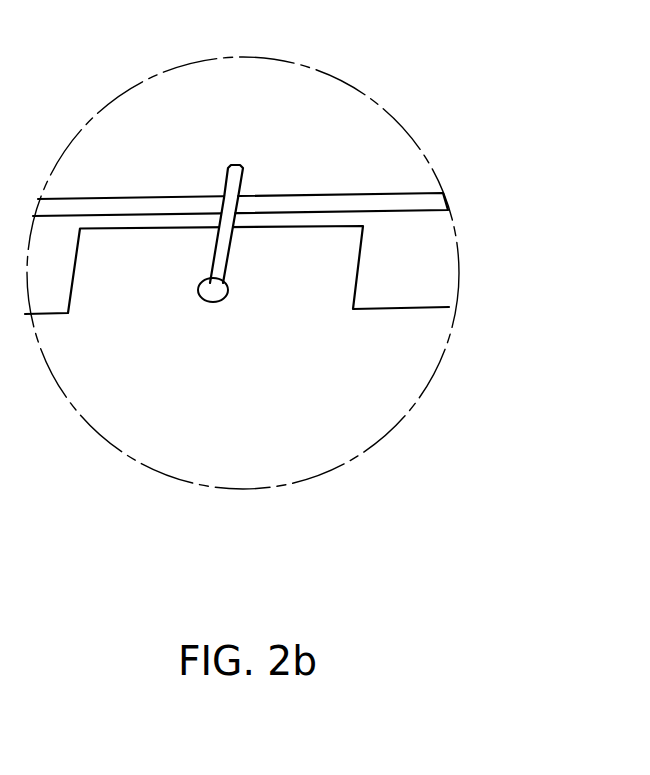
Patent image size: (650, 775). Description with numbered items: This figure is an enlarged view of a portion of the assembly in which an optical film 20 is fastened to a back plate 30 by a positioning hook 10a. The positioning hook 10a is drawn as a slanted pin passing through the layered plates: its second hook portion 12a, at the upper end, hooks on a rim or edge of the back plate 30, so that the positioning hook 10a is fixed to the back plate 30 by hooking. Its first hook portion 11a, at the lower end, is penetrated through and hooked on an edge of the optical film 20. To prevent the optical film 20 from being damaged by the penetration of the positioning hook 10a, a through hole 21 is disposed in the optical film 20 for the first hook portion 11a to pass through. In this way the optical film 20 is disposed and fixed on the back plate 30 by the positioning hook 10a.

The positioning hook 10a is at (362, 159).
The second hook portion 12a is at (247, 187).
The first hook portion 11a is at (223, 284).
The back plate 30 is at (437, 212).
The optical film 20 is at (345, 243).
The through hole 21 is at (226, 294).